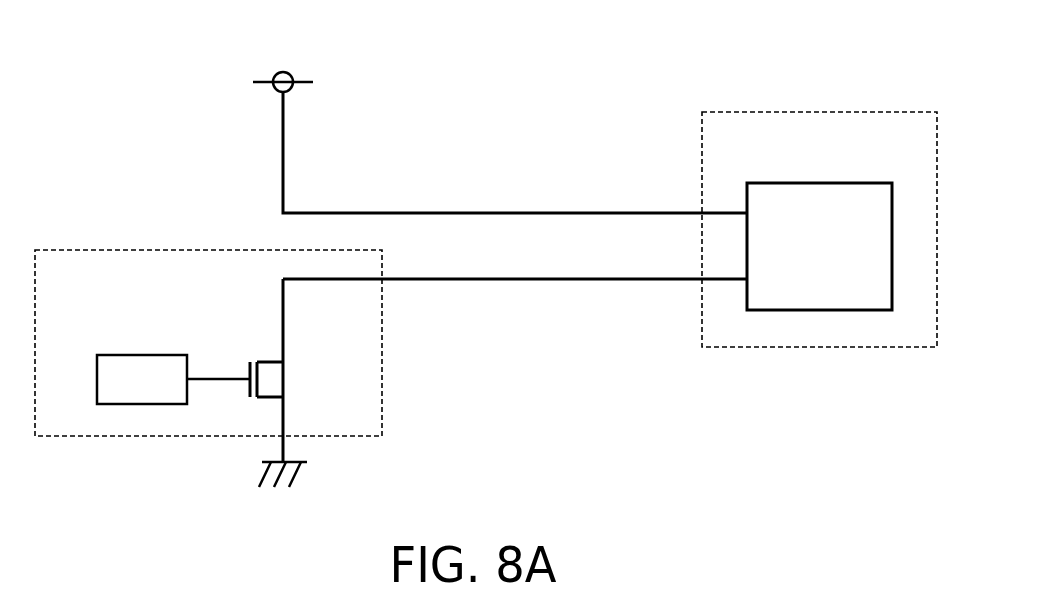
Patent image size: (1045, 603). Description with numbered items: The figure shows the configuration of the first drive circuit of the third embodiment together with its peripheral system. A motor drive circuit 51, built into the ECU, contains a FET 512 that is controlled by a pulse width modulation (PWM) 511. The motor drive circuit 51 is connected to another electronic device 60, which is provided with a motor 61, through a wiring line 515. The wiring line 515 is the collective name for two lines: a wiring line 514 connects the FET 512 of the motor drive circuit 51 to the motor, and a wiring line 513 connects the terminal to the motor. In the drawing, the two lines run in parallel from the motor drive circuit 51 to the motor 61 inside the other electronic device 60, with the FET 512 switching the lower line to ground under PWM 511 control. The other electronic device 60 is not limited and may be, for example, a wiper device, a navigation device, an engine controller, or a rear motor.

The motor drive circuit 51 is at (88, 248).
The pulse width modulation (PWM) 511 is at (128, 405).
The FET 512 is at (298, 374).
The wiring line 513 is at (443, 131).
The wiring line 514 is at (458, 213).
The wiring line 515 is at (500, 175).
The another electronic device 60 is at (863, 109).
The motor 61 is at (835, 312).